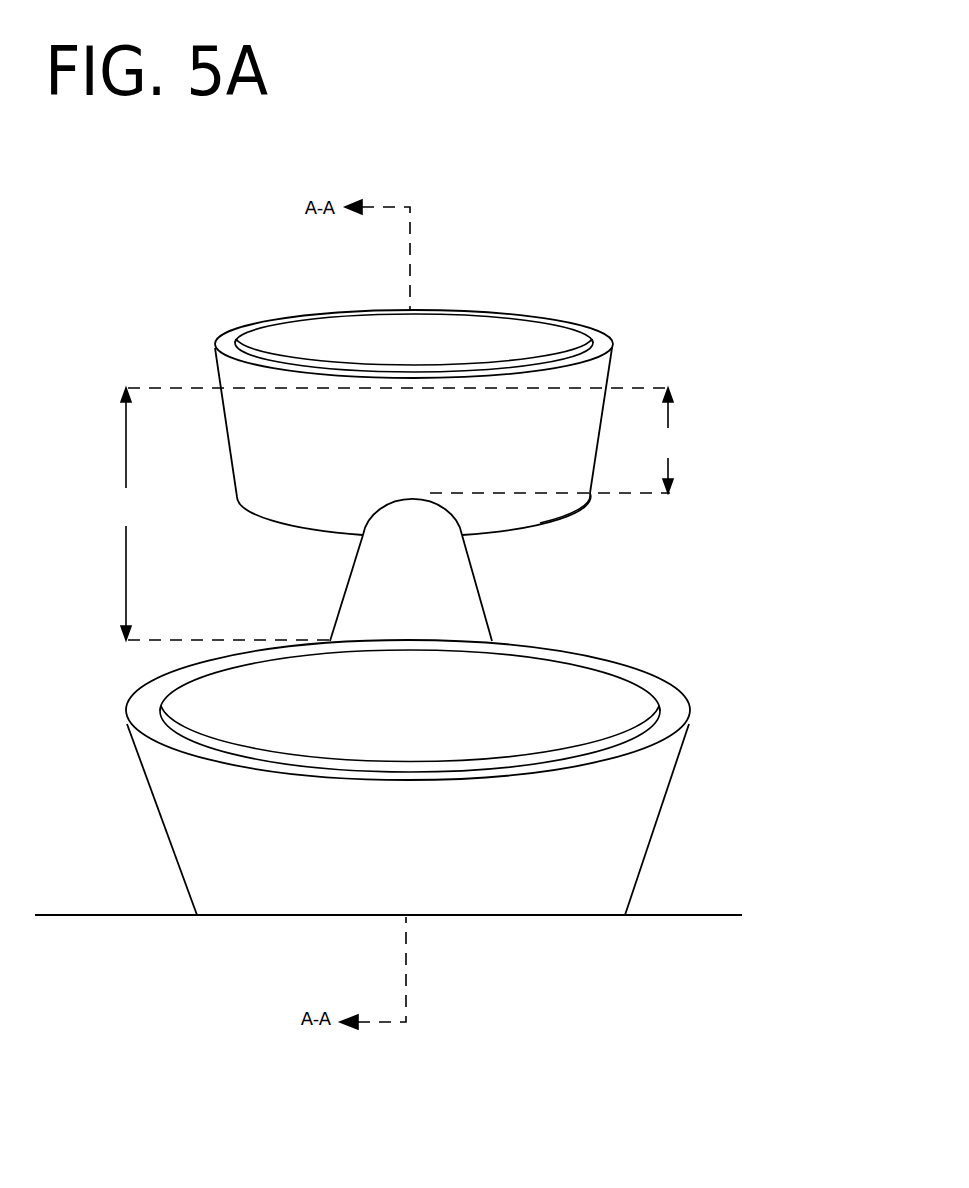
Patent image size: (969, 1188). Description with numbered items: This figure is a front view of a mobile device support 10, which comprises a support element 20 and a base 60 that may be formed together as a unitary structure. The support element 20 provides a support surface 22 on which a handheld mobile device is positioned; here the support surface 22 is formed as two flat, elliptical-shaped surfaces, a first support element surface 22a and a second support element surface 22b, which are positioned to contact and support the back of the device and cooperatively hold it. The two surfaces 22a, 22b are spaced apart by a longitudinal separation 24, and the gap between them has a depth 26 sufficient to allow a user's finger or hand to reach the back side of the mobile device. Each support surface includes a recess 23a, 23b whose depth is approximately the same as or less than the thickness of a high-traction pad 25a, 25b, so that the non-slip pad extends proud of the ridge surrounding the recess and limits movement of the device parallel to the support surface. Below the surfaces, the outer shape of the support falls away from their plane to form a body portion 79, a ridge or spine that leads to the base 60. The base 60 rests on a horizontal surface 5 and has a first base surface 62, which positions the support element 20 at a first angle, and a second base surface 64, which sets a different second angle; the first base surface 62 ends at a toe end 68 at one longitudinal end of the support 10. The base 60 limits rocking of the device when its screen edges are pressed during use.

The horizontal surface 5 is at (680, 915).
The mobile device support 10 is at (560, 233).
The support element 20 is at (258, 498).
The support surface 22 is at (215, 338).
The first support element surface 22a is at (583, 335).
The second support element surface 22b is at (613, 687).
The recess 23a is at (607, 357).
The recess 23b is at (653, 732).
The longitudinal separation 24 is at (390, 514).
The high-traction pad 25a is at (542, 318).
The high-traction pad 25b is at (610, 655).
The depth 26 is at (555, 440).
The base 60 is at (492, 622).
The first base surface 62 is at (513, 925).
The second base surface 64 is at (562, 513).
The toe end 68 is at (433, 923).
The body portion 79 is at (400, 582).